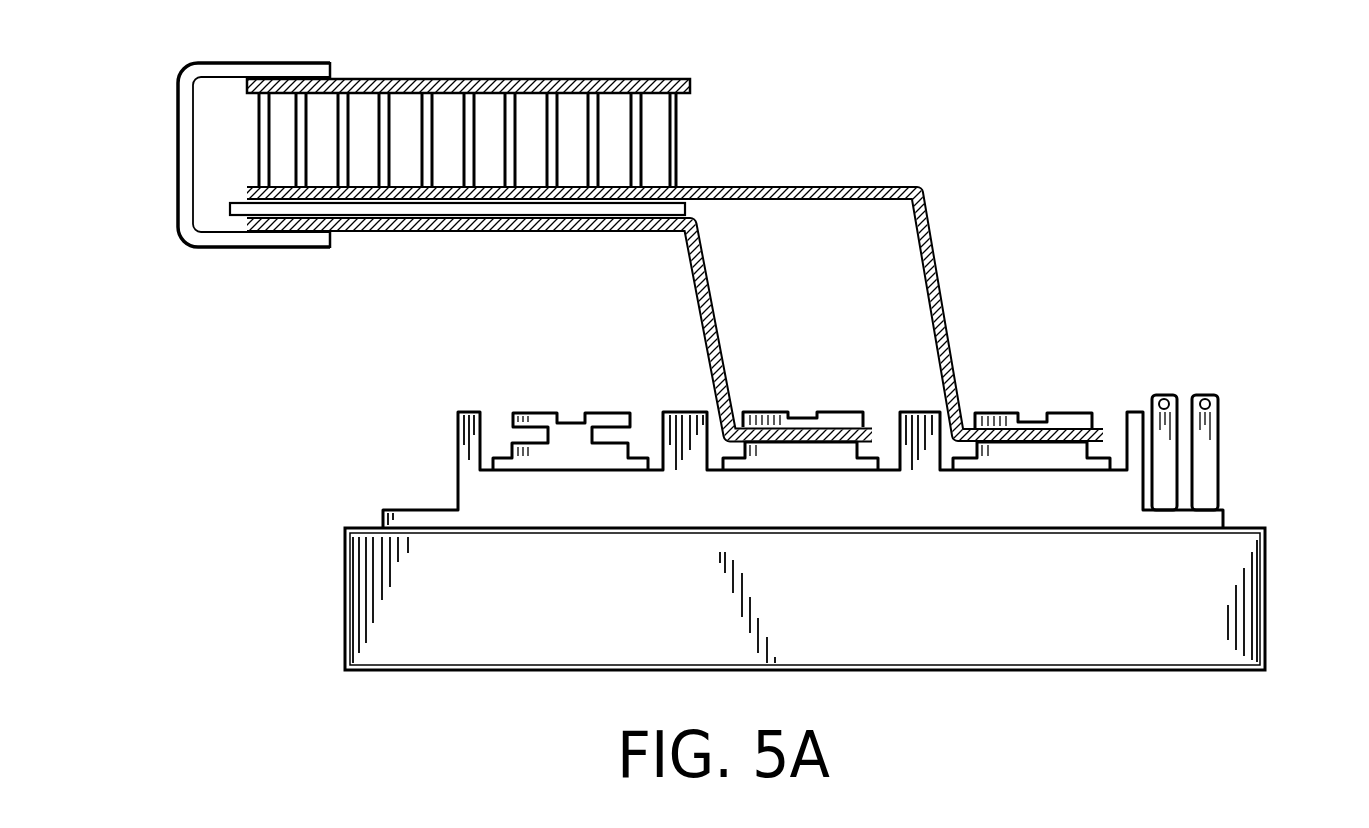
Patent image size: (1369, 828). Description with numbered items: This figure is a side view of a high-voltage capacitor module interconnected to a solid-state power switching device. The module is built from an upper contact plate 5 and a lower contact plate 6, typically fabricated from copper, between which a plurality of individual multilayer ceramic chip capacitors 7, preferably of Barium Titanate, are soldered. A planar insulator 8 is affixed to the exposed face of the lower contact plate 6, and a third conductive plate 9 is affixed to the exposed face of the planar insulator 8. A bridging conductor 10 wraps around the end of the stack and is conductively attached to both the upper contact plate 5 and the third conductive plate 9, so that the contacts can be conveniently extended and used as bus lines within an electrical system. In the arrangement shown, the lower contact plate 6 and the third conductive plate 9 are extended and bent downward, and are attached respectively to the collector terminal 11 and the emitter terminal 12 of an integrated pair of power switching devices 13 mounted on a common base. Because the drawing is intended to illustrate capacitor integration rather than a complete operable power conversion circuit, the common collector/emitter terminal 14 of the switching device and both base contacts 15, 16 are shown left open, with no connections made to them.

The upper contact plate 5 is at (675, 79).
The lower contact plate 6 is at (920, 192).
The multilayer ceramic chip capacitors 7 is at (617, 167).
The planar insulator 8 is at (682, 205).
The third conductive plate 9 is at (690, 278).
The bridging conductor 10 is at (178, 128).
The collector terminal 11 is at (1030, 418).
The emitter terminal 12 is at (805, 418).
The integrated pair of power switching devices 13 is at (1255, 620).
The common collector/emitter terminal 14 is at (530, 413).
The base contact 15 is at (1163, 395).
The base contact 16 is at (1218, 433).